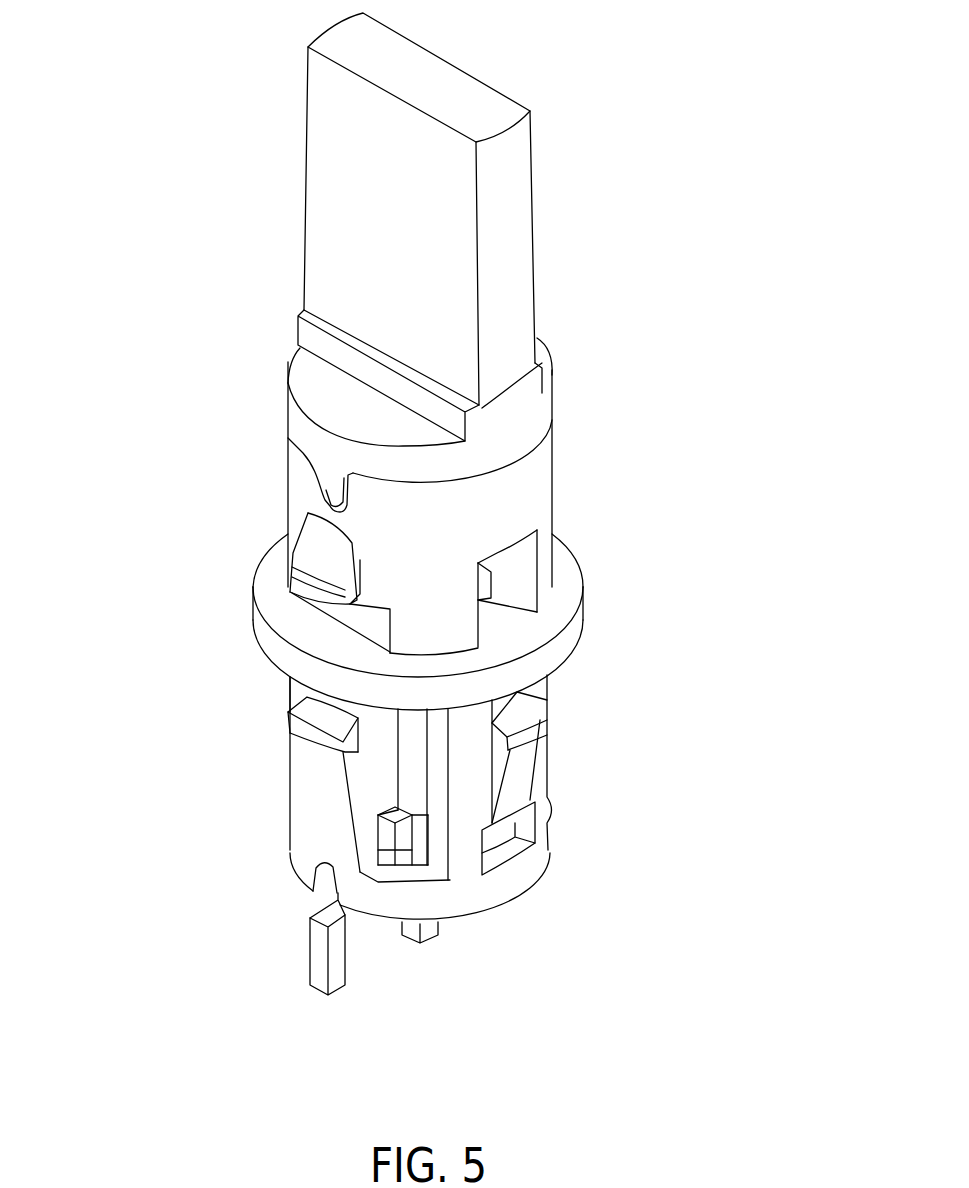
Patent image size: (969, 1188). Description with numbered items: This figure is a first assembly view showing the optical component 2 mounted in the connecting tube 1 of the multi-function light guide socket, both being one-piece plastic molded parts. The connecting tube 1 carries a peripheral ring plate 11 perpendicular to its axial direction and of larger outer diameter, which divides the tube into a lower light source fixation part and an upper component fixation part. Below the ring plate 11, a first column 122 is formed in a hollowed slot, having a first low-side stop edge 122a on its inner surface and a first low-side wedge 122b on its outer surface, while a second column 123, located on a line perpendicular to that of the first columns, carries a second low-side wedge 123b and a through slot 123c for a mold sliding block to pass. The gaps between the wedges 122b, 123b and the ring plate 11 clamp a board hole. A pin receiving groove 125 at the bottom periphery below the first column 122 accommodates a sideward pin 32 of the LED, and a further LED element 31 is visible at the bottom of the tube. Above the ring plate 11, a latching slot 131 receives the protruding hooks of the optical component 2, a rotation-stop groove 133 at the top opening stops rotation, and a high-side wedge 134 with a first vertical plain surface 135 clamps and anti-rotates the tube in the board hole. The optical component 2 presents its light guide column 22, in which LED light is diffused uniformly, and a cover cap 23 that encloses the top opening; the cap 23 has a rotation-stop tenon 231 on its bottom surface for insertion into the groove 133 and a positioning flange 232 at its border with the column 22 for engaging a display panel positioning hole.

The connecting tube 1 is at (572, 463).
The optical component 2 is at (553, 177).
The peripheral ring plate 11 is at (573, 630).
The light guide column 22 is at (338, 198).
The cover cap 23 is at (333, 405).
The terminal 31 is at (417, 843).
The pins 32 is at (318, 952).
The first column 122 is at (318, 773).
The first low-side stop edge 122a is at (398, 815).
The first low-side wedge 122b is at (312, 717).
The second column 123 is at (527, 758).
The second low-side wedge 123b is at (527, 715).
The through slot 123c is at (527, 825).
The pin receiving groove 125 is at (325, 892).
The latching slot 131 is at (522, 570).
The rotation-stop groove 133 is at (327, 483).
The high-side wedge 134 is at (318, 540).
The first vertical plain surface 135 is at (332, 608).
The rotation-stop tenon 231 is at (323, 475).
The positioning flange 232 is at (330, 345).